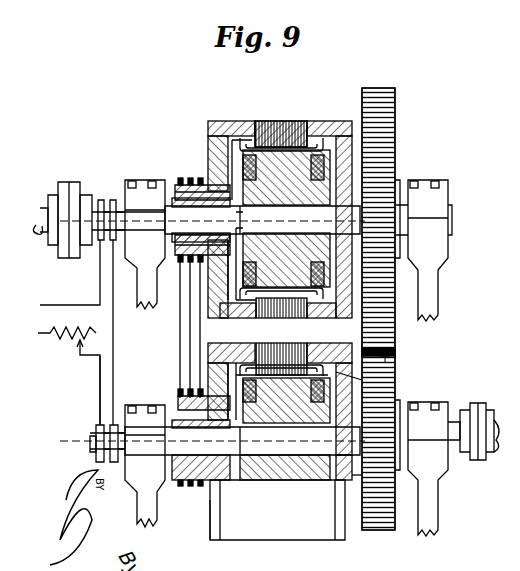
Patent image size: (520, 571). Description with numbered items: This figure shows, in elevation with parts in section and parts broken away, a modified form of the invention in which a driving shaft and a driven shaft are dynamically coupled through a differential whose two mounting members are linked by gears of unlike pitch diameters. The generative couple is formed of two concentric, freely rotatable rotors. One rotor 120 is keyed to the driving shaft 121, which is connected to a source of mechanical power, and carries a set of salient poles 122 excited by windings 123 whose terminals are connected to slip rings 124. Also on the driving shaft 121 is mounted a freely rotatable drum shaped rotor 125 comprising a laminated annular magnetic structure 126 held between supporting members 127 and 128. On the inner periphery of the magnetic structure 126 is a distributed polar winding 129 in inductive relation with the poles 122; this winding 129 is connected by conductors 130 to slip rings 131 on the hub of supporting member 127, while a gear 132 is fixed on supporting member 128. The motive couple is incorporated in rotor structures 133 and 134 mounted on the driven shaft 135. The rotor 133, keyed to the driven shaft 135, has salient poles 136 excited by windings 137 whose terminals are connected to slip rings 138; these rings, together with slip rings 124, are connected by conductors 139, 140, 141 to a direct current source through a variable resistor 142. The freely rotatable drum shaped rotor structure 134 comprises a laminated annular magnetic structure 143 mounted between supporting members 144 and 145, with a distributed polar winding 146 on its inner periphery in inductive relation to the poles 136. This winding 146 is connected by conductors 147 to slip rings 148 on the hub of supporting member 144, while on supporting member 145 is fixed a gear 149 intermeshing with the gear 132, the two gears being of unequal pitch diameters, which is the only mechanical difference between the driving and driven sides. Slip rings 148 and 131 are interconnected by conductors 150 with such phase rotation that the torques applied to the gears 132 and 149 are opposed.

The rotor 120 is at (355, 202).
The driving shaft 121 is at (48, 190).
The salient poles 122 is at (343, 192).
The windings 123 is at (340, 175).
The slip rings 124 is at (112, 198).
The drum shaped rotor 125 is at (203, 104).
The laminated annular magnetic structure 126 is at (301, 122).
The supporting member 127 is at (210, 132).
The supporting member 128 is at (342, 184).
The distributed polar winding 129 is at (242, 140).
The conductors 130 is at (214, 155).
The slip rings 131 is at (201, 178).
The gear 132 is at (388, 88).
The rotor structure 133 is at (388, 364).
The drum shaped rotor structure 134 is at (332, 541).
The driven shaft 135 is at (498, 452).
The salient poles 136 is at (290, 395).
The windings 137 is at (398, 398).
The slip rings 138 is at (92, 452).
The conductor 139 is at (113, 340).
The conductor 140 is at (99, 296).
The conductor 141 is at (99, 388).
The variable resistor 142 is at (62, 344).
The laminated annular magnetic structure 143 is at (312, 346).
The supporting member 144 is at (212, 523).
The supporting member 145 is at (362, 528).
The distributed polar winding 146 is at (390, 352).
The conductors 147 is at (190, 380).
The slip rings 148 is at (201, 498).
The gear 149 is at (395, 380).
The conductors 150 is at (190, 352).